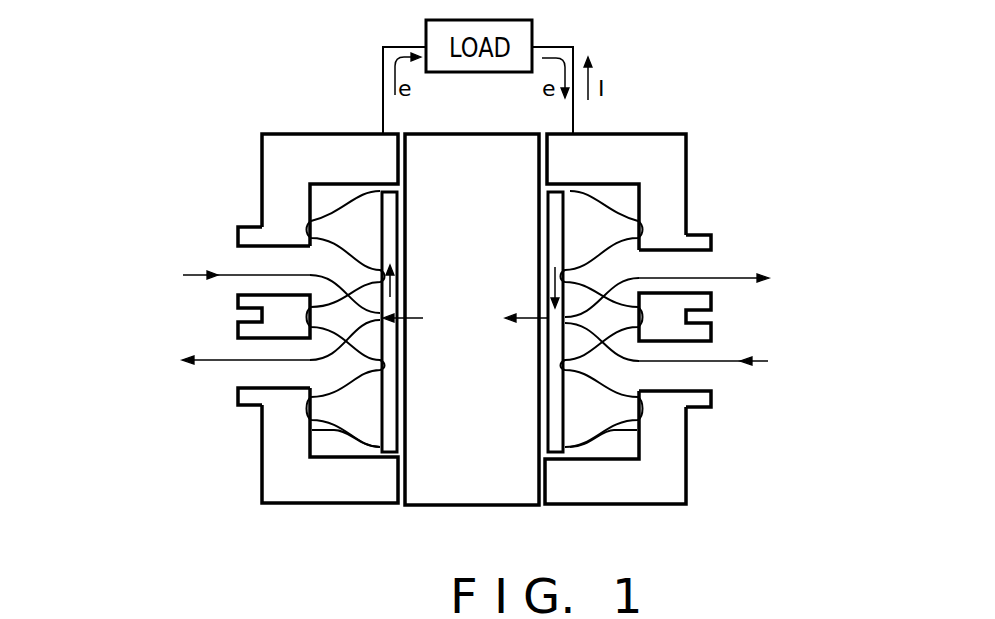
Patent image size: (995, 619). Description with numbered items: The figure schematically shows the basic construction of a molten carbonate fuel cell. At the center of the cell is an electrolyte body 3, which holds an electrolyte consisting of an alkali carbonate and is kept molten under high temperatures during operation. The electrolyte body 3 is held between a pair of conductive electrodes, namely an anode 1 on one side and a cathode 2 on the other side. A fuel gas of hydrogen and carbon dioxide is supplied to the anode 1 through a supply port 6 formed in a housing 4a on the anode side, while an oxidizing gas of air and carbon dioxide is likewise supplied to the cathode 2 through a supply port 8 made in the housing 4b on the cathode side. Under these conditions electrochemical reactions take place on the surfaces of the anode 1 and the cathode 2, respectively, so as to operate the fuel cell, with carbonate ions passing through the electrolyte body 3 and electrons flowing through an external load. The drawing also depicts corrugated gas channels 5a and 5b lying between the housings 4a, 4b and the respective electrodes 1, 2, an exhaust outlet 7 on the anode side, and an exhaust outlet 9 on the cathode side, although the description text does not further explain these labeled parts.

The anode 1 is at (391, 446).
The cathode 2 is at (556, 446).
The electrolyte body 3 is at (490, 492).
The housing 4a is at (312, 485).
The cathode-side housing 4b is at (662, 492).
The anode-side corrugated gas channel 5a is at (312, 442).
The cathode-side corrugated gas channel 5b is at (623, 433).
The supply port 6 is at (257, 259).
The anode exhaust gas outlet 7 is at (247, 369).
The supply port 8 is at (722, 367).
The cathode exhaust gas outlet 9 is at (698, 263).